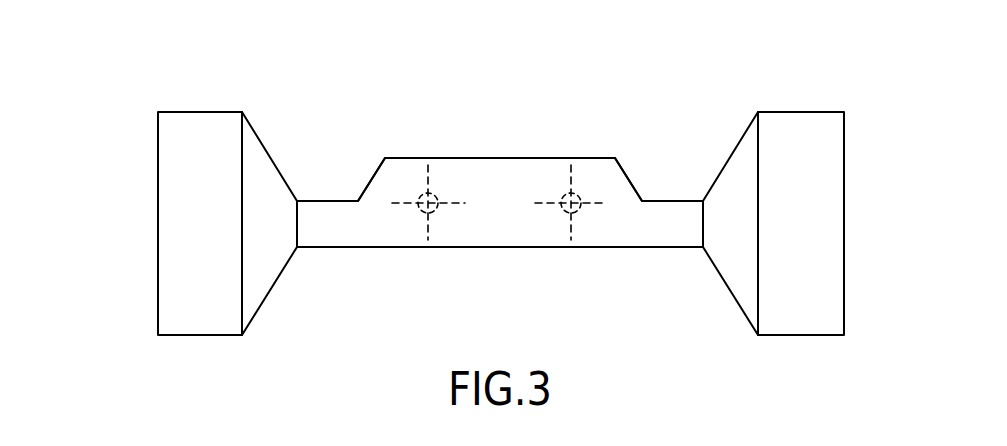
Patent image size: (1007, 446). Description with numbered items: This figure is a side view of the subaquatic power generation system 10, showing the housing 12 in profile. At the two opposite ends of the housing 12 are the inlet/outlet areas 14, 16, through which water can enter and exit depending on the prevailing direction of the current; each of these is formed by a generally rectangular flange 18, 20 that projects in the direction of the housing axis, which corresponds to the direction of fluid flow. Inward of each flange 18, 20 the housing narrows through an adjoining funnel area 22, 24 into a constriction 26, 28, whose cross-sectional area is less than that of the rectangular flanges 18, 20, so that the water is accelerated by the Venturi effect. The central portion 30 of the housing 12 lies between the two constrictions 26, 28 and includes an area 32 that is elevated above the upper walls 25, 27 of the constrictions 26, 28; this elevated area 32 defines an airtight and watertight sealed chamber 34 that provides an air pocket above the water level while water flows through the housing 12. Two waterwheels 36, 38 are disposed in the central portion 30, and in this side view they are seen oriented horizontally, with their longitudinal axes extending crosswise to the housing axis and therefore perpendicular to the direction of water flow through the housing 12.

The subaquatic power generation system 10 is at (612, 115).
The housing 12 is at (401, 133).
The inlet/outlet area 14 is at (148, 190).
The inlet/outlet area 16 is at (853, 225).
The rectangular flange 18 is at (201, 112).
The rectangular flange 20 is at (793, 112).
The funnel area 22 is at (262, 142).
The funnel area 24 is at (730, 157).
The upper wall 25 is at (321, 201).
The constriction 26 is at (325, 222).
The upper wall 27 is at (671, 201).
The constriction 28 is at (673, 220).
The central portion 30 is at (490, 247).
The elevated area 32 is at (462, 158).
The sealed chamber 34 is at (532, 183).
The waterwheel 36 is at (407, 212).
The waterwheel 38 is at (548, 222).